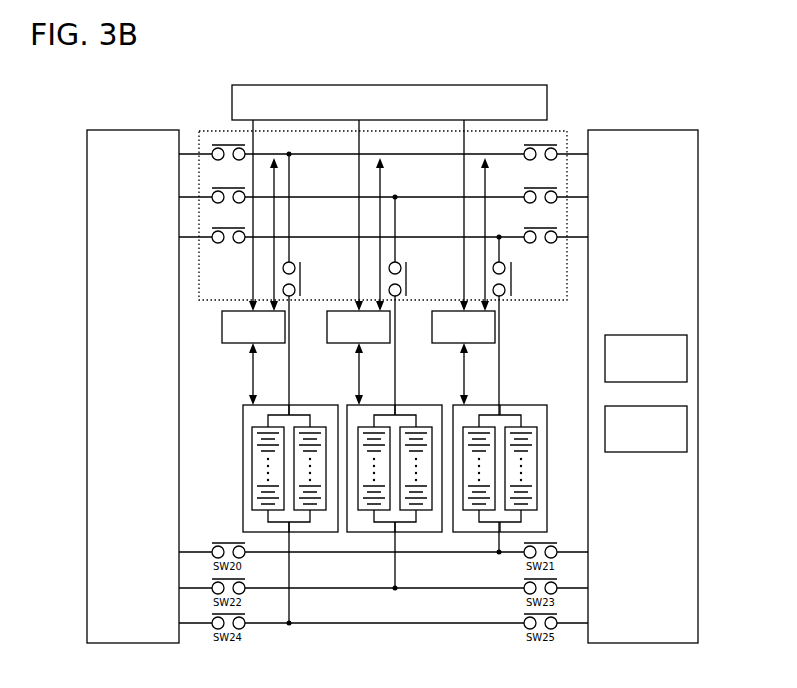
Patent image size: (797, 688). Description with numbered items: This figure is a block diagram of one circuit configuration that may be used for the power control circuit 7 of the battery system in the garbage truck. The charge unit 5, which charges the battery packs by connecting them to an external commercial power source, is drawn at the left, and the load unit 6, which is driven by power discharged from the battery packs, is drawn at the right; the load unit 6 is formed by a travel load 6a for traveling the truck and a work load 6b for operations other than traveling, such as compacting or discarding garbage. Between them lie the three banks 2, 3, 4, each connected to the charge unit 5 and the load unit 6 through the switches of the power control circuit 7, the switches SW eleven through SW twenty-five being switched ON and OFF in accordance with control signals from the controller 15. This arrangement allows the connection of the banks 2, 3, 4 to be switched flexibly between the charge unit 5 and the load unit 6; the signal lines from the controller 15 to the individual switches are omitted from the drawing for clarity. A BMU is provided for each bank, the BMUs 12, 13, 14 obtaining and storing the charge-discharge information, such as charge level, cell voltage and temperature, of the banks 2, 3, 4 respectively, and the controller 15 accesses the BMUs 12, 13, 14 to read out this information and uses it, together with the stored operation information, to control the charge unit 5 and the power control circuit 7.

The bank 2 is at (311, 404).
The bank 3 is at (416, 404).
The bank 4 is at (521, 404).
The charge unit 5 is at (168, 130).
The load unit 6 is at (680, 130).
The travel load 6a is at (687, 355).
The work load 6b is at (687, 425).
The power control circuit 7 is at (548, 130).
The BMU 12 is at (285, 330).
The BMU 13 is at (390, 330).
The BMU 14 is at (495, 330).
The controller 15 is at (535, 85).